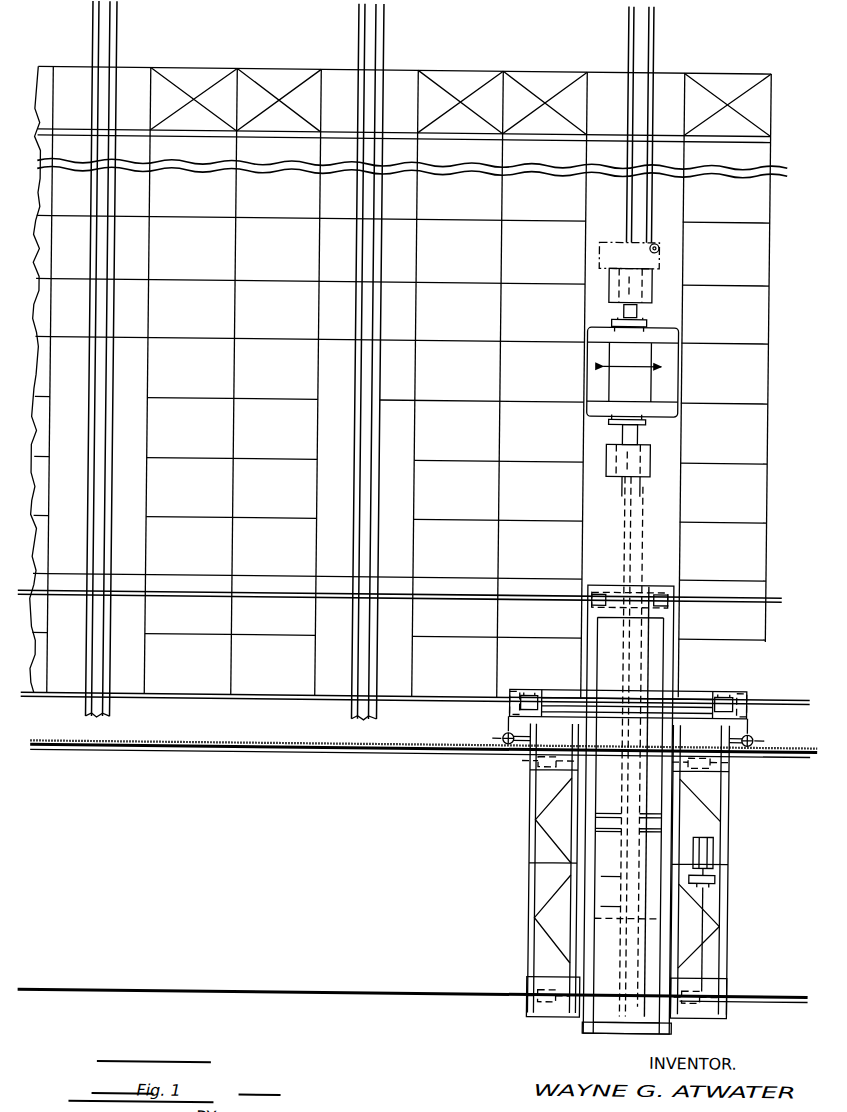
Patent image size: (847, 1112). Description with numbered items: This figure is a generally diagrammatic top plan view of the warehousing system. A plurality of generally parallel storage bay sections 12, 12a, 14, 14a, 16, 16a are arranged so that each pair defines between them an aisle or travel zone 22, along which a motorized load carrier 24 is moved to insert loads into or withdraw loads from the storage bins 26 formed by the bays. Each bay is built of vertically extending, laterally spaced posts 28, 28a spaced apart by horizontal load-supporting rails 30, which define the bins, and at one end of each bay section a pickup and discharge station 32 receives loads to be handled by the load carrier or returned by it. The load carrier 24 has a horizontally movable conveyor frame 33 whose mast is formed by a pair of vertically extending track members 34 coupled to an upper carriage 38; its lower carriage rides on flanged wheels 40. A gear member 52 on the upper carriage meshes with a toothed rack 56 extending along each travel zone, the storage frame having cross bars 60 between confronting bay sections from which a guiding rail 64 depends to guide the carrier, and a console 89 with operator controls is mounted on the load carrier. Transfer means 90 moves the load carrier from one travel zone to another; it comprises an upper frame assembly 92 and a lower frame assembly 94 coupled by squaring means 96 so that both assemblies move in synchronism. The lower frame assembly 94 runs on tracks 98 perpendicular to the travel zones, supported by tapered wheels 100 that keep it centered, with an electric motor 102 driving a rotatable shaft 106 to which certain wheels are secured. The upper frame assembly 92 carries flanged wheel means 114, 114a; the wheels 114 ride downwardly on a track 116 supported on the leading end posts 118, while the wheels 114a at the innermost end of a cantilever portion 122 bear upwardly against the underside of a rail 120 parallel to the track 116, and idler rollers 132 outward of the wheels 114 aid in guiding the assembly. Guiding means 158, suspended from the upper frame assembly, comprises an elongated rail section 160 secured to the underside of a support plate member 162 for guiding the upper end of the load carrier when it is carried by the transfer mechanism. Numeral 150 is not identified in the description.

The storage bay section 12 is at (778, 424).
The storage bay section 12a is at (588, 508).
The storage bay section 14 is at (419, 310).
The storage bay section 14a is at (322, 314).
The storage bay section 16 is at (152, 312).
The storage bay section 16a is at (54, 328).
The aisle or travel zone 22 is at (136, 78).
The load carrier 24 is at (660, 352).
The storage bins 26 is at (46, 472).
The post 28 is at (425, 215).
The post 28a is at (238, 215).
The load-supporting rails 30 is at (283, 278).
The pickup and discharge station 32 is at (218, 66).
The conveyor frame 33 is at (612, 282).
The track members 34 is at (641, 306).
The upper carriage 38 is at (602, 354).
The flanged wheels 40 is at (657, 262).
The gear member 52 is at (658, 238).
The toothed rack 56 is at (654, 210).
The cross bars 60 is at (131, 340).
The guiding rail 64 is at (628, 22).
The console 89 is at (612, 222).
The transfer means 90 is at (739, 831).
The upper frame assembly 92 is at (592, 800).
The lower frame assembly 94 is at (534, 936).
The squaring means 96 is at (509, 729).
The tracks 98 is at (350, 750).
The tapered wheels 100 is at (546, 758).
The electric motor 102 is at (724, 848).
The rotatable shaft 106 is at (712, 958).
The flanged wheel means 114 is at (536, 690).
The flanged wheels 114a is at (674, 592).
The track 116 is at (452, 694).
The leading end posts 118 is at (50, 696).
The rail or track member 120 is at (281, 596).
The cantilever portion 122 is at (592, 1022).
The idler rollers 132 is at (520, 686).
The axle 150 is at (500, 748).
The guiding means 158 is at (664, 927).
The rail section 160 is at (630, 915).
The support plate member 162 is at (630, 858).